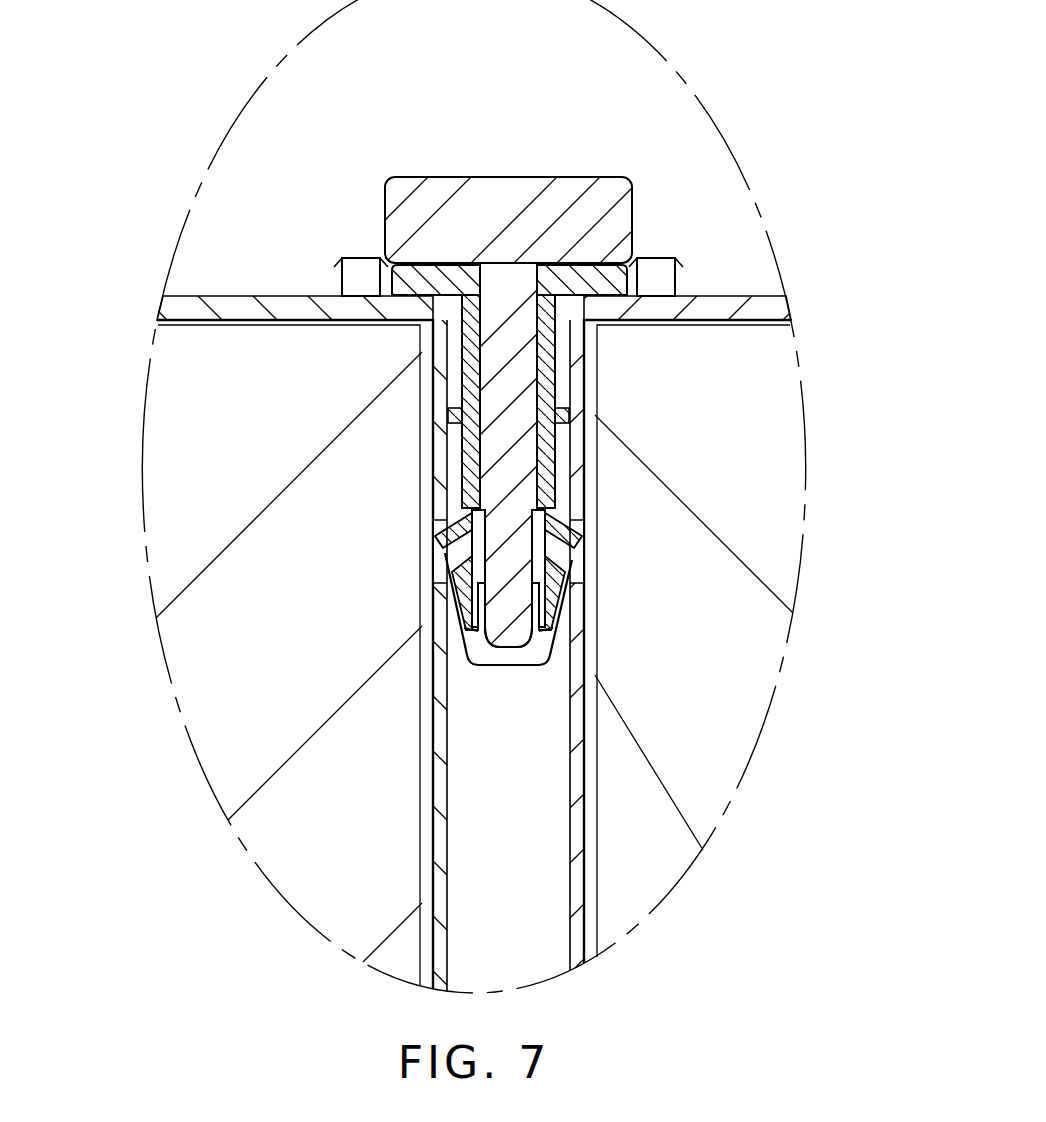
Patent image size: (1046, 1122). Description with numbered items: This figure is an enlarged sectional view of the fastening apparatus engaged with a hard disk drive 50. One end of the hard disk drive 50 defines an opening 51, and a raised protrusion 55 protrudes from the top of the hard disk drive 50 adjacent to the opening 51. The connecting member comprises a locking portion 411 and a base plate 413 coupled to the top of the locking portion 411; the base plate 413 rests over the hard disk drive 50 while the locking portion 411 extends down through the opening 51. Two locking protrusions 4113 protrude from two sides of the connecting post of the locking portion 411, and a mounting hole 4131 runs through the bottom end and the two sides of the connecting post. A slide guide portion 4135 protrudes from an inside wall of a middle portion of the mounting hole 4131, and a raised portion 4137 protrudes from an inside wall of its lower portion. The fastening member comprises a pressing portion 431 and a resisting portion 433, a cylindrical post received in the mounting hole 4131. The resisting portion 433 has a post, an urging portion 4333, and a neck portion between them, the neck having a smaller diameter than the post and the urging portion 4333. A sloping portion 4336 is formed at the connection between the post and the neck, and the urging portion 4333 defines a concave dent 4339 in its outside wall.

The hard disk drive 50 is at (178, 416).
The opening 51 is at (483, 553).
The raised protrusion 55 is at (337, 270).
The locking portion 411 is at (537, 343).
The base plate 413 is at (597, 276).
The locking protrusions 4113 is at (447, 530).
The mounting hole 4131 is at (480, 557).
The slide guide portion 4135 is at (540, 502).
The raised portion 4137 is at (473, 604).
The pressing portion 431 is at (514, 200).
The resisting portion 433 is at (520, 398).
The urging portion 4333 is at (512, 627).
The sloping portion 4336 is at (545, 540).
The concave dent 4339 is at (472, 623).